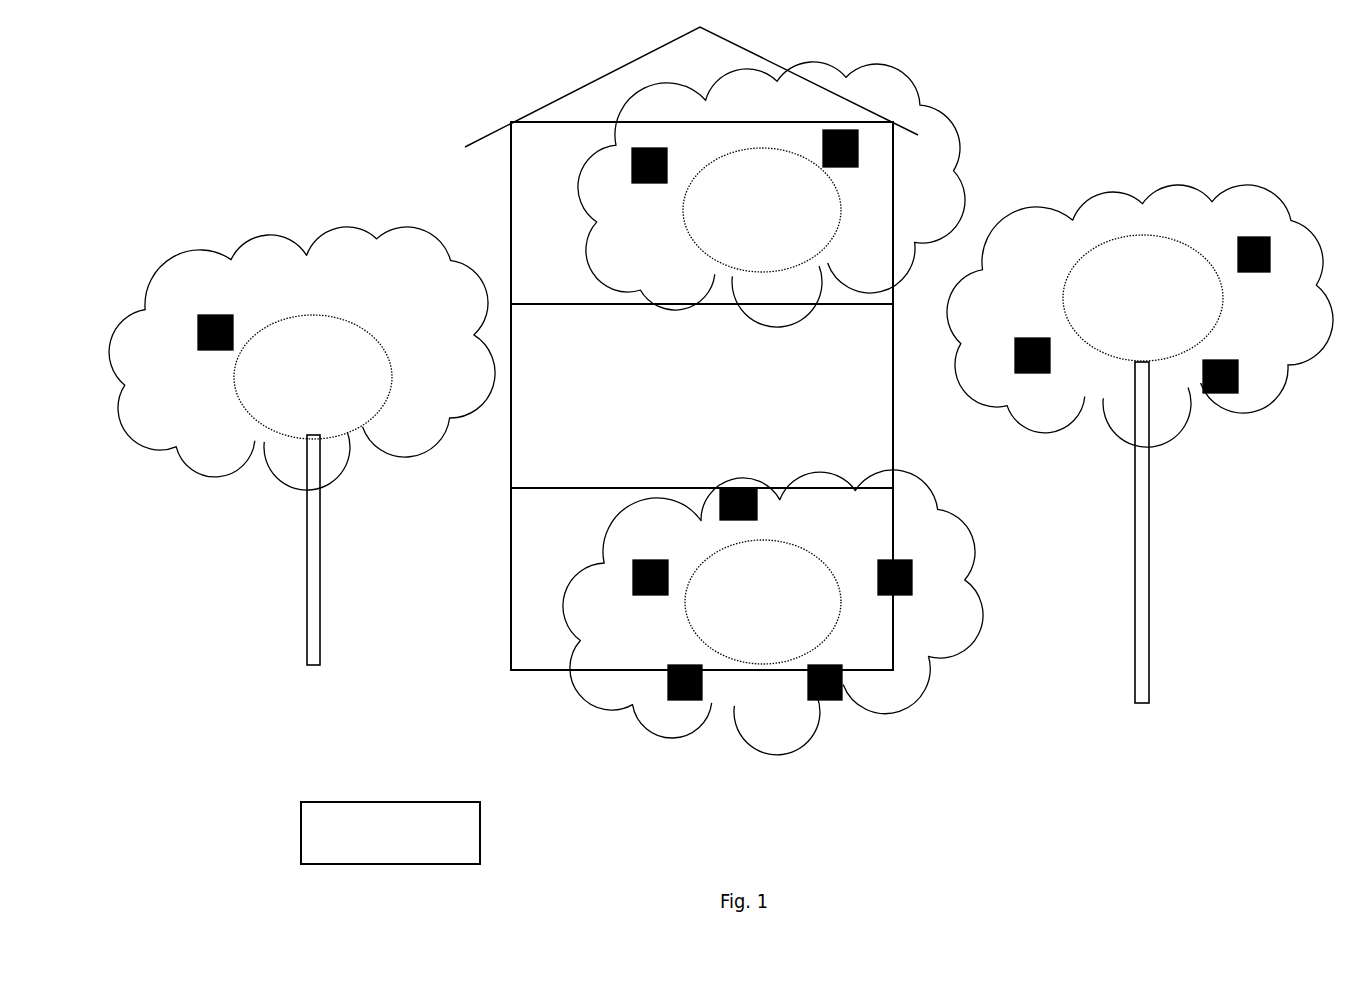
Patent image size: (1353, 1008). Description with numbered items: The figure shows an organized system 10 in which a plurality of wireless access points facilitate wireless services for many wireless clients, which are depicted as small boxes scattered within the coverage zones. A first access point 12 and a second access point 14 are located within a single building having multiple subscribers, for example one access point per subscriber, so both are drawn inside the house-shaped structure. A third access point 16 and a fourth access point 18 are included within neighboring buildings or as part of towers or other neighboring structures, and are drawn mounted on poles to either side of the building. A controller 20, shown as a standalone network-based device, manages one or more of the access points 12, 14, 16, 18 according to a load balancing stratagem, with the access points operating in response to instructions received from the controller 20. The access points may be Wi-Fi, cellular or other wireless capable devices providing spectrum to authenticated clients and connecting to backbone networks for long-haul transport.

The organized system 10 is at (370, 145).
The first access point 12 is at (710, 557).
The second access point 14 is at (700, 248).
The third access point 16 is at (320, 312).
The fourth access point 18 is at (1072, 270).
The controller 20 is at (322, 802).